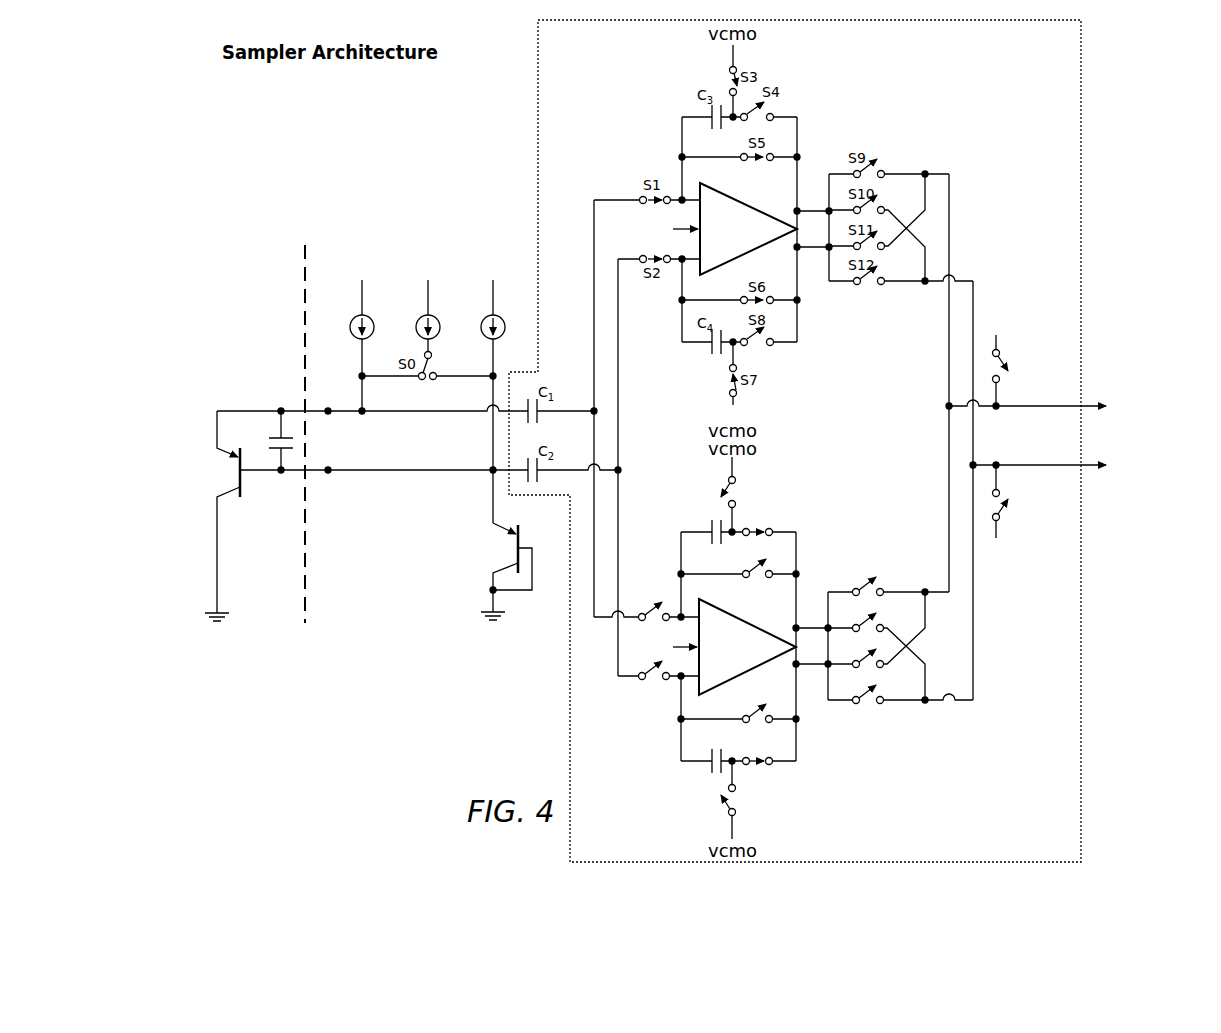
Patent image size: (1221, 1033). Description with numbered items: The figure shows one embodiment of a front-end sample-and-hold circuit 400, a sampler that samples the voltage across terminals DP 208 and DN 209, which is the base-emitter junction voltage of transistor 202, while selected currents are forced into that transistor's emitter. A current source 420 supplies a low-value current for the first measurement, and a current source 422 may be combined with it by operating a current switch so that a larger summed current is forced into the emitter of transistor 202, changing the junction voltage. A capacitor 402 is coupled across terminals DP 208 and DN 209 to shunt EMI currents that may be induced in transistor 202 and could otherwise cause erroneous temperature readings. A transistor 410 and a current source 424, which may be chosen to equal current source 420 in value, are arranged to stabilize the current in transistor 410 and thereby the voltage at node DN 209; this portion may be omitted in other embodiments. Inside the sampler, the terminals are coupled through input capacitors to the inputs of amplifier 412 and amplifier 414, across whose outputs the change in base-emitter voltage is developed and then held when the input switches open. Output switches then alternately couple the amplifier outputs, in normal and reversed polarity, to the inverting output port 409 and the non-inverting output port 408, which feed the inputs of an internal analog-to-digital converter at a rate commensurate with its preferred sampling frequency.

The transistor 202 is at (215, 464).
The capacitor 402 is at (270, 437).
The terminal DP 208 is at (324, 388).
The terminal DN 209 is at (335, 455).
The current source 420 is at (373, 319).
The current source 422 is at (439, 319).
The current source 424 is at (504, 319).
The transistor 410 is at (512, 545).
The amplifier 412 is at (748, 202).
The amplifier 414 is at (747, 618).
The output OutM 409 is at (1059, 370).
The output OutP 408 is at (1068, 502).
The sample-and-hold circuit 400 is at (1073, 853).